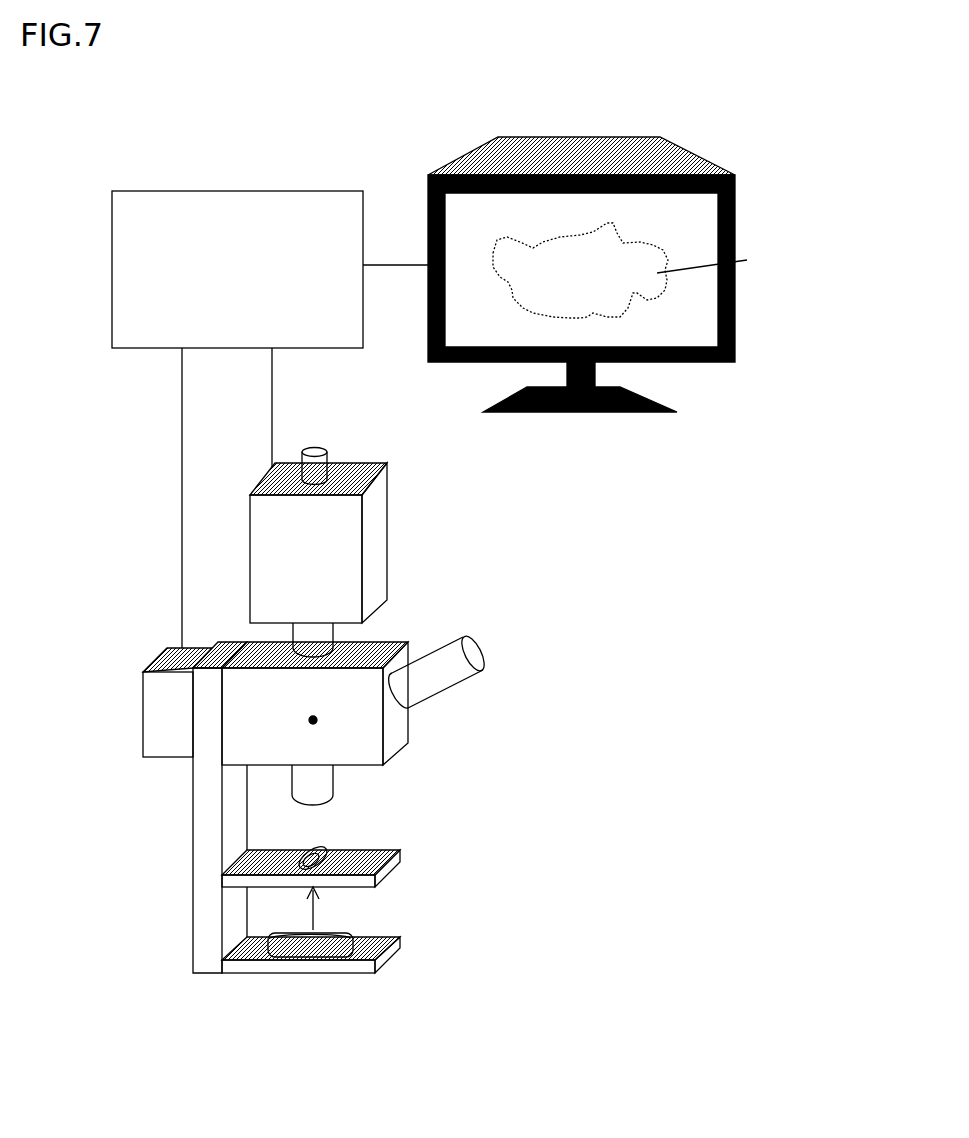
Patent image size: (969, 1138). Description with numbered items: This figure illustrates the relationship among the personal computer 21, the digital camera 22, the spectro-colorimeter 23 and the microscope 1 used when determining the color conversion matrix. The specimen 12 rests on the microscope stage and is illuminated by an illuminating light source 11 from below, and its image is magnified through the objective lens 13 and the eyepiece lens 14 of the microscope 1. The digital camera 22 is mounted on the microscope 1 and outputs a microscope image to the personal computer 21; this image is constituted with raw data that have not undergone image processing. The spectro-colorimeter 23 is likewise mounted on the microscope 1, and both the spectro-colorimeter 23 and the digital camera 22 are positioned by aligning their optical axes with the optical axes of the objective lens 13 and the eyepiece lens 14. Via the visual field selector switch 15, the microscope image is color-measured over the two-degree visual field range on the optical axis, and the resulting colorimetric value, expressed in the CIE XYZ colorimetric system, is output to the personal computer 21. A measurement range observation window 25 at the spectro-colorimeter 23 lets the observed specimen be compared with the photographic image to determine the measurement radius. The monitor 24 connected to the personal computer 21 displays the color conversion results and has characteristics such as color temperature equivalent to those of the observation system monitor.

The microscope 1 is at (203, 793).
The illuminating light source 11 is at (315, 947).
The specimen 12 is at (327, 863).
The objective lens 13 is at (318, 783).
The eyepiece lens 14 is at (430, 682).
The visual field selector switch 15 is at (313, 720).
The personal computer 21 is at (128, 282).
The digital camera 22 is at (153, 712).
The spectro-colorimeter 23 is at (370, 542).
The monitor 24 is at (665, 155).
The measurement range observation window 25 is at (318, 460).